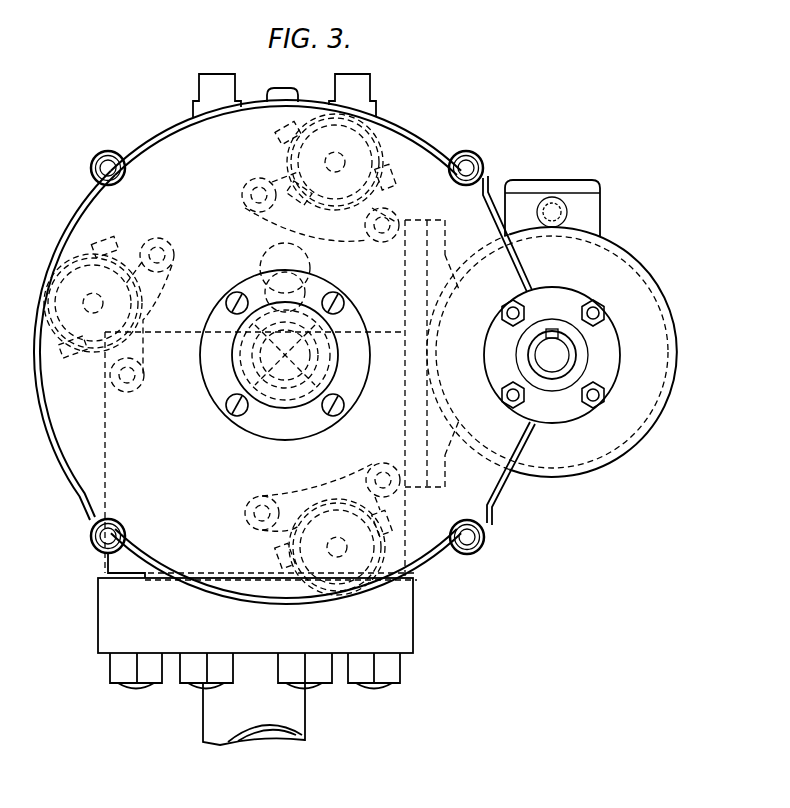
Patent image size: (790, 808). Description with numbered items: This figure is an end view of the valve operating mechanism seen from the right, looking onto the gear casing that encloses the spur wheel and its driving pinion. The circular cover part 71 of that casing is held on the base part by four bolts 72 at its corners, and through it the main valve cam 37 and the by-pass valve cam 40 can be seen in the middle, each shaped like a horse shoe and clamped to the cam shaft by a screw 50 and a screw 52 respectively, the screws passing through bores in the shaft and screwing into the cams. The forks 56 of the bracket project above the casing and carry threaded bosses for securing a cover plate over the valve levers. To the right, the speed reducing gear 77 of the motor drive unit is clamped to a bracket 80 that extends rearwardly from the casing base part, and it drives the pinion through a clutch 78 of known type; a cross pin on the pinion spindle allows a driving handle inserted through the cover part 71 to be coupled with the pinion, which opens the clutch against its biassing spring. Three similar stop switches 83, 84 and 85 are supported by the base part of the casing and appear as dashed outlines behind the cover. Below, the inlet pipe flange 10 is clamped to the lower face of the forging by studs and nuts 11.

The inlet pipe flange 10 is at (403, 627).
The studs and nuts 11 is at (380, 675).
The cam 37 is at (340, 384).
The cam 40 is at (323, 367).
The screw 50 is at (258, 323).
The screw 52 is at (332, 322).
The forks 56 is at (340, 85).
The cover part 71 is at (488, 485).
The bolts 72 is at (469, 168).
The speed reducing gear 77 is at (612, 268).
The clutch 78 is at (563, 333).
The bracket 80 is at (415, 232).
The stop switch 83 is at (70, 268).
The stop switch 84 is at (352, 133).
The stop switch 85 is at (416, 572).